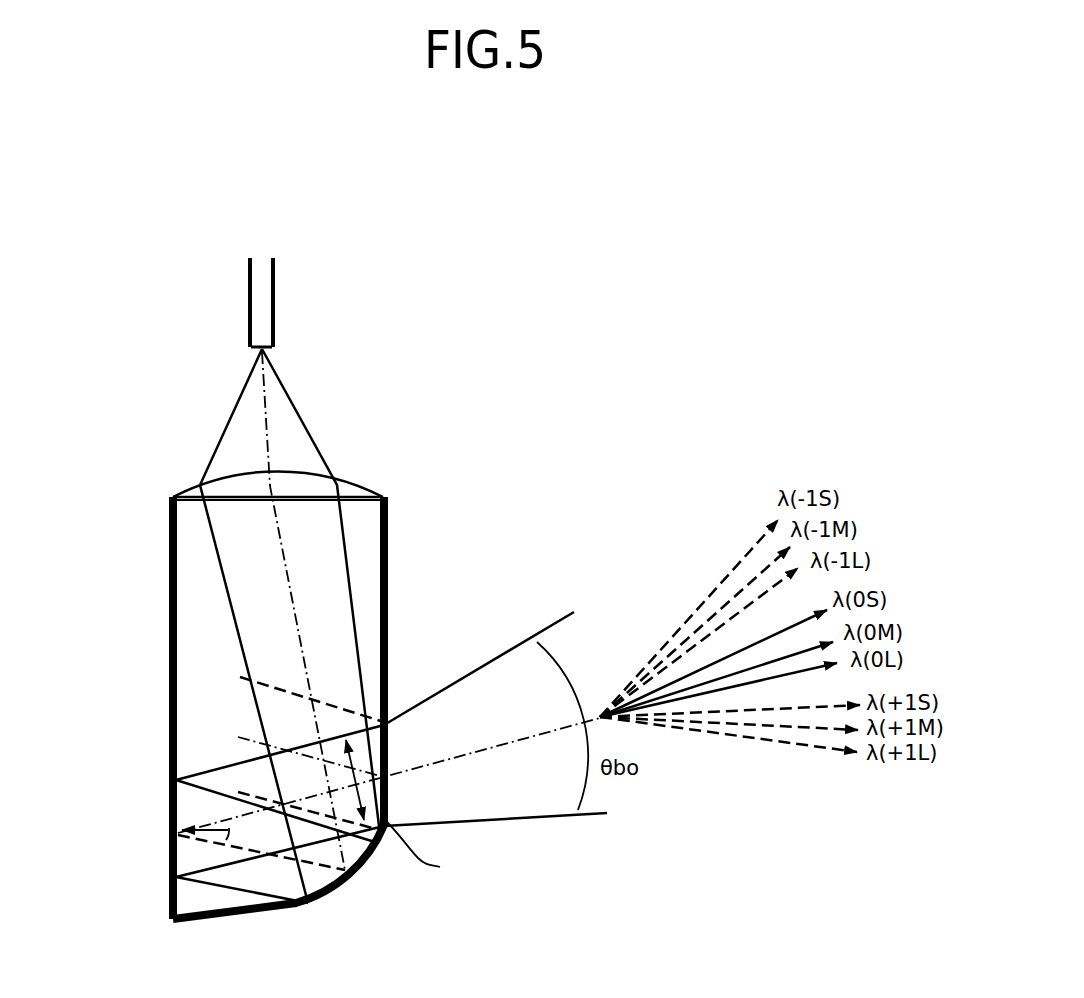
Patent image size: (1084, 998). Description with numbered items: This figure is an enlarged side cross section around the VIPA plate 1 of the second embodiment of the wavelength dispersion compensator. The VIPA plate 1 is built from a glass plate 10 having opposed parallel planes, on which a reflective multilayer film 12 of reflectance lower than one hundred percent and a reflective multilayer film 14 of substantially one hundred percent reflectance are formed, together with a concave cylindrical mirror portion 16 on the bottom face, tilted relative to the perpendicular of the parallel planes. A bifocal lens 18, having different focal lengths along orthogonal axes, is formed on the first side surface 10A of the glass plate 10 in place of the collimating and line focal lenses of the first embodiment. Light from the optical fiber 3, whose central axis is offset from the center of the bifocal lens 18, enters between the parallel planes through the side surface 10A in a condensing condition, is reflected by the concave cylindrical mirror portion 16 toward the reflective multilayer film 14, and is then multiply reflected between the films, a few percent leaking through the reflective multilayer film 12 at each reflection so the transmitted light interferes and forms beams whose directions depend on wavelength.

The VIPA plate 1 is at (134, 530).
The optical fiber 3 is at (247, 315).
The glass plate 10 is at (187, 705).
The first side surface 10A is at (353, 497).
The reflective multilayer film 12 is at (388, 607).
The reflective multilayer film 14 is at (168, 622).
The concave cylindrical mirror portion 16 is at (340, 890).
The bifocal lens 18 is at (222, 477).